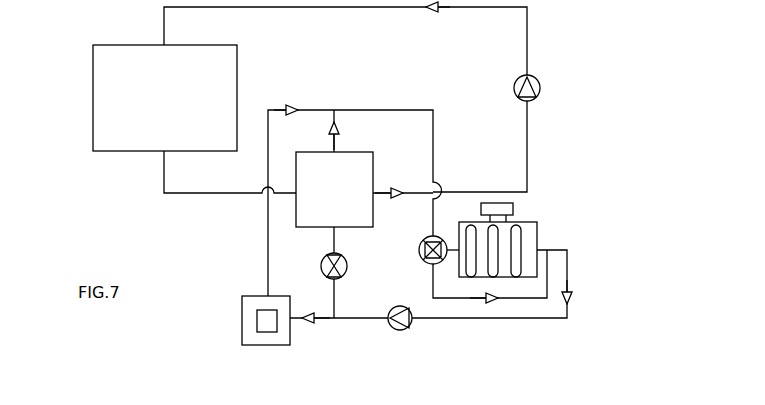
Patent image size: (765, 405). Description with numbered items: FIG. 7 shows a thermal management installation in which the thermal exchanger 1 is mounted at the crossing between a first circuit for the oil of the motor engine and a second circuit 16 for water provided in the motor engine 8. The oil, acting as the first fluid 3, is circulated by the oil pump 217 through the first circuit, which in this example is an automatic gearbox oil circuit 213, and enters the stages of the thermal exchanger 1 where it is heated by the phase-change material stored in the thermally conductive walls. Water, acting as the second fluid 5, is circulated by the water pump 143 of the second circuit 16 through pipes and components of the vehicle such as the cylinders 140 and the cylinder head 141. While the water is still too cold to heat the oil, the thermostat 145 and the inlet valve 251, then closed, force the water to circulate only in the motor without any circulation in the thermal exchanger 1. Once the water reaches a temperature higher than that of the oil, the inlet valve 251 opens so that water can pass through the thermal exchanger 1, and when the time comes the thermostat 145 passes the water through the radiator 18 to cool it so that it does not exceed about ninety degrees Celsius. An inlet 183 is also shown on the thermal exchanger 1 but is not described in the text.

The thermal exchanger 1 is at (312, 233).
The first fluid 3 is at (234, 197).
The second fluid 5 is at (470, 321).
The motor engine 8 is at (512, 281).
The second circuit 16 is at (356, 331).
The radiator 18 is at (533, 228).
The cylinders 140 is at (238, 340).
The cylinder head 141 is at (258, 340).
The water pump 143 is at (402, 336).
The thermostat 145 is at (420, 243).
The inlet line 183 is at (320, 142).
The automatic gearbox oil circuit 213 is at (105, 70).
The oil pump 217 is at (537, 76).
The inlet valve 251 is at (344, 274).